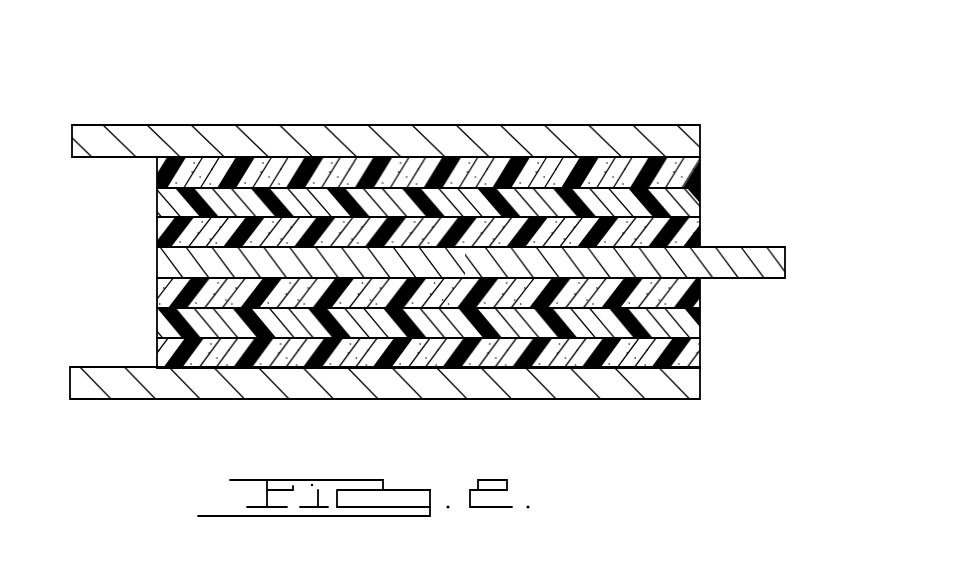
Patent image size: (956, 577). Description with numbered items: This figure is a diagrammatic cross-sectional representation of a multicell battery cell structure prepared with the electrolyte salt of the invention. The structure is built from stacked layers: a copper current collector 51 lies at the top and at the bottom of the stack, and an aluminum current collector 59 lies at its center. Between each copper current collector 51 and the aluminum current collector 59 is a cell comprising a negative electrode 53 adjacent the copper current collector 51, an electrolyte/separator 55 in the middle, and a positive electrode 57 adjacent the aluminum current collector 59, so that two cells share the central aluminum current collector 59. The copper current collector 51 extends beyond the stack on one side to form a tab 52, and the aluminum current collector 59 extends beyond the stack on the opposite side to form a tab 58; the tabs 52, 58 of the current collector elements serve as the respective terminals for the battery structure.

The copper current collector 51 is at (673, 140).
The tab 52 is at (88, 125).
The negative electrode 53 is at (687, 165).
The electrolyte/separator 55 is at (684, 204).
The positive electrode 57 is at (157, 225).
The tab 58 is at (785, 263).
The aluminum current collector 59 is at (157, 264).